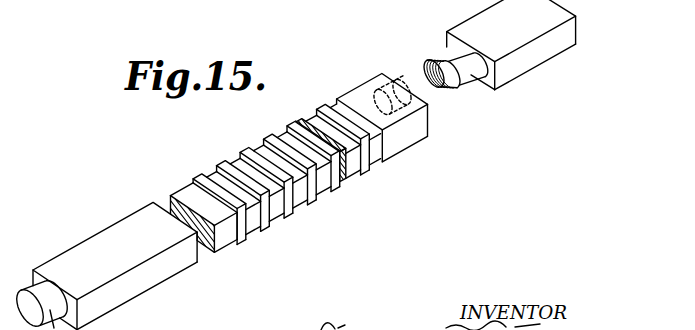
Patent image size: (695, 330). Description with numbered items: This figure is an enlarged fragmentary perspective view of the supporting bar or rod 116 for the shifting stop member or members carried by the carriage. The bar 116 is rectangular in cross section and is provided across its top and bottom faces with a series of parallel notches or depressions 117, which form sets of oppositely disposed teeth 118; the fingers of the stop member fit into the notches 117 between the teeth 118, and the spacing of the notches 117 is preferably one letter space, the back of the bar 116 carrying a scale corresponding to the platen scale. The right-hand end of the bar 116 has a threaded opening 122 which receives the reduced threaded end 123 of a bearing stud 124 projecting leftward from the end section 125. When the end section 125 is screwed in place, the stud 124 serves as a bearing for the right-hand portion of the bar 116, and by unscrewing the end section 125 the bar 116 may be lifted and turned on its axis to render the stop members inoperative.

The bar or rod 116 is at (352, 92).
The notches or depressions 117 is at (229, 161).
The teeth 118 is at (177, 191).
The threaded opening 122 is at (405, 80).
The reduced threaded end 123 is at (445, 88).
The bearing stud 124 is at (465, 78).
The end section 125 is at (543, 62).